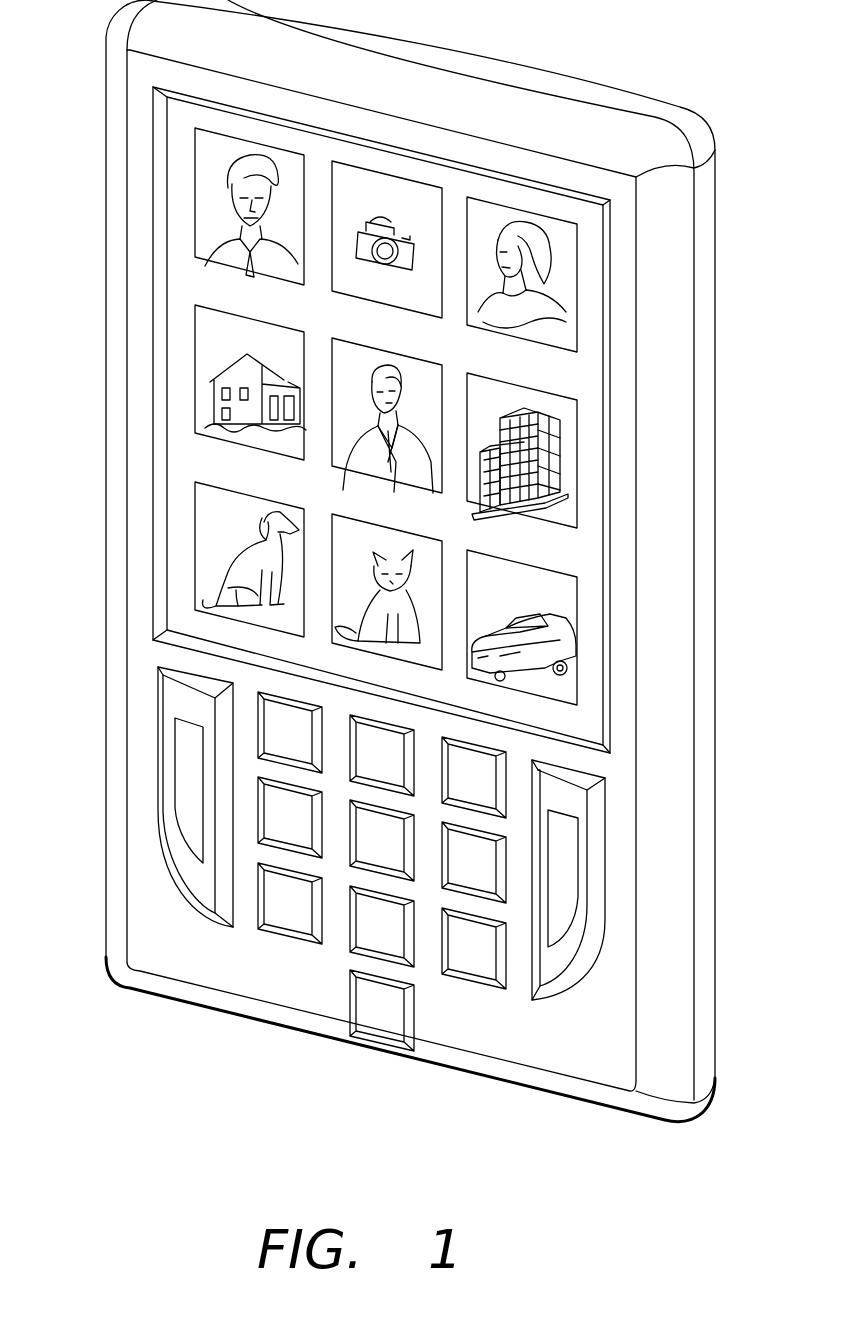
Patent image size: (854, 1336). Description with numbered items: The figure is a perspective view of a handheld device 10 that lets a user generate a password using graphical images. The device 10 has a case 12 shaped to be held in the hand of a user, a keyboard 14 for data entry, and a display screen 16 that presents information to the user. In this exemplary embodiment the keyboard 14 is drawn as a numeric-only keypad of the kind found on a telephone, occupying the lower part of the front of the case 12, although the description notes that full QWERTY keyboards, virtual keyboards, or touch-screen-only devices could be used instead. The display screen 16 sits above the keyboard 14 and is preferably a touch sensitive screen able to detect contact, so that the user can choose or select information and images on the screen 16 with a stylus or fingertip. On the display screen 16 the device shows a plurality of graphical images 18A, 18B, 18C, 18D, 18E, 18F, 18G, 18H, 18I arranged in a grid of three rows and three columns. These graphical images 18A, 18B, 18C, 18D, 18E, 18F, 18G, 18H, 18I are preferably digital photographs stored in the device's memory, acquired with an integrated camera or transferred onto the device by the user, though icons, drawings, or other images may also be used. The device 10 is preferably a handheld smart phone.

The handheld device 10 is at (477, 38).
The case 12 is at (665, 328).
The keyboard 14 is at (97, 658).
The display screen 16 is at (590, 457).
The graphical image 18A is at (249, 270).
The graphical image 18B is at (385, 301).
The graphical image 18C is at (521, 336).
The graphical image 18D is at (249, 443).
The graphical image 18E is at (385, 478).
The graphical image 18F is at (521, 512).
The graphical image 18G is at (247, 616).
The graphical image 18H is at (385, 648).
The graphical image 18I is at (516, 683).